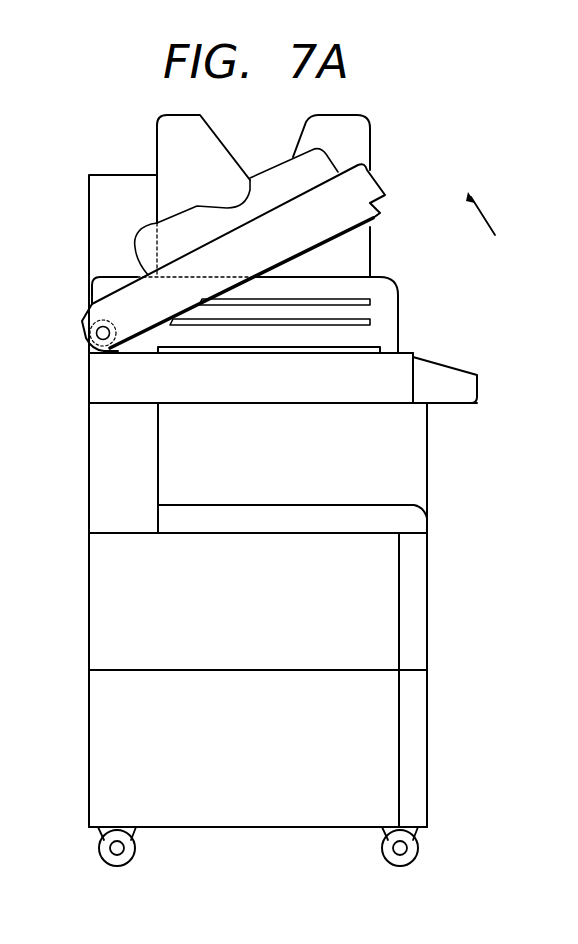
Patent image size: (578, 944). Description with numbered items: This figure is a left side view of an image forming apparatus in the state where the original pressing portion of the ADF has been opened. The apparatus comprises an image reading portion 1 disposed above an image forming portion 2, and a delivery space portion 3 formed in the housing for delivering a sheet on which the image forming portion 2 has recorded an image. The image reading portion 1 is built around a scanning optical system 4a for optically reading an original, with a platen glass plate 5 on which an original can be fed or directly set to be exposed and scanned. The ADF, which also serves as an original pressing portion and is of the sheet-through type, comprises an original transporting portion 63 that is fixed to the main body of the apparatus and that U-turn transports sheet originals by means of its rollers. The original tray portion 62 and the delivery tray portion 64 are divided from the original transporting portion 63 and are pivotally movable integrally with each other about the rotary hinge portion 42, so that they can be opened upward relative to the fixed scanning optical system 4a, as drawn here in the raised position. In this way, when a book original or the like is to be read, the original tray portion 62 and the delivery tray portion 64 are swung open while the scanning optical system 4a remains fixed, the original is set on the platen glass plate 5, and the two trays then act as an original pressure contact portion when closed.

The image reading portion 1 is at (97, 382).
The image forming portion 2 is at (418, 585).
The delivery space portion 3 is at (417, 482).
The scanning optical system 4a is at (413, 356).
The platen glass plate 5 is at (358, 354).
The rotary hinge portion 42 is at (90, 312).
The original tray portion 62 is at (288, 238).
The original transporting portion 63 is at (395, 304).
The delivery tray portion 64 is at (383, 180).